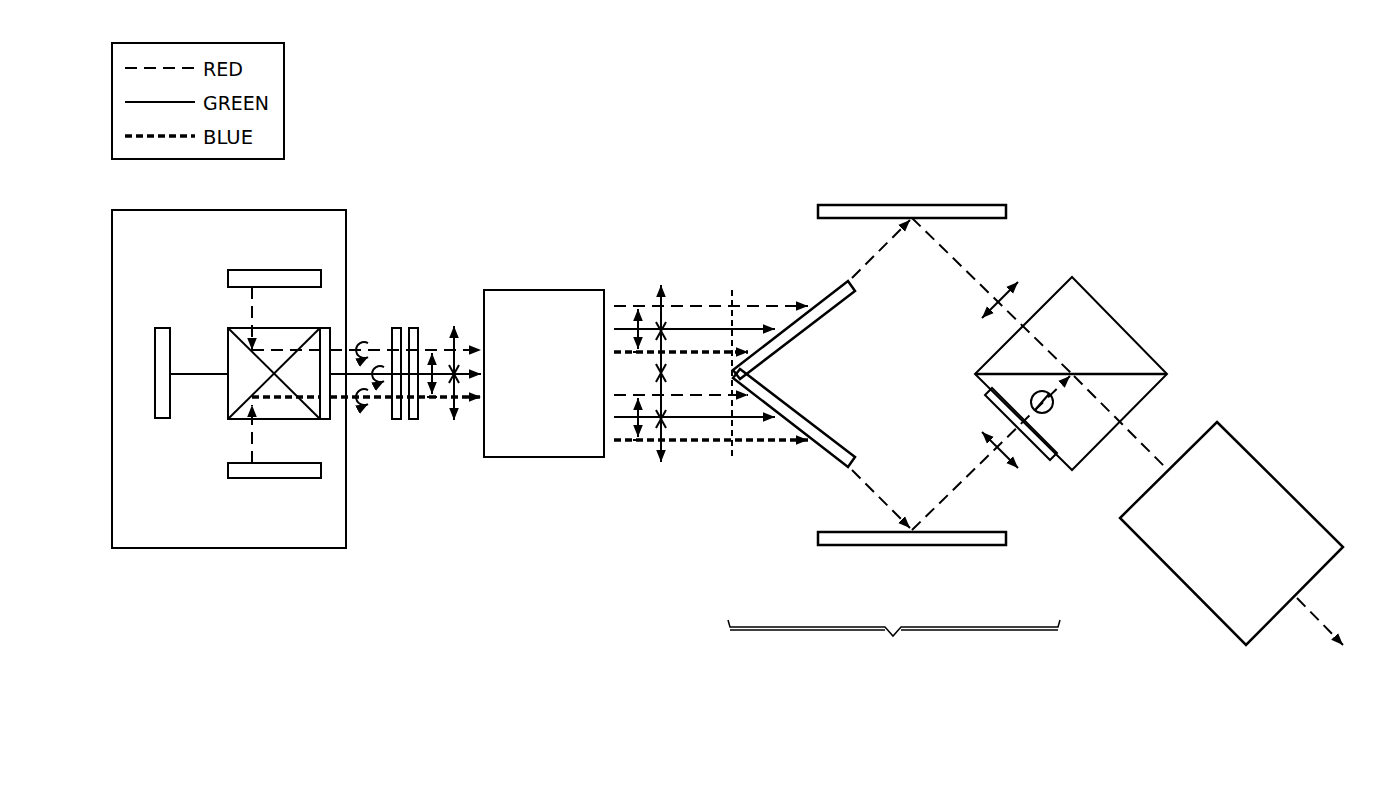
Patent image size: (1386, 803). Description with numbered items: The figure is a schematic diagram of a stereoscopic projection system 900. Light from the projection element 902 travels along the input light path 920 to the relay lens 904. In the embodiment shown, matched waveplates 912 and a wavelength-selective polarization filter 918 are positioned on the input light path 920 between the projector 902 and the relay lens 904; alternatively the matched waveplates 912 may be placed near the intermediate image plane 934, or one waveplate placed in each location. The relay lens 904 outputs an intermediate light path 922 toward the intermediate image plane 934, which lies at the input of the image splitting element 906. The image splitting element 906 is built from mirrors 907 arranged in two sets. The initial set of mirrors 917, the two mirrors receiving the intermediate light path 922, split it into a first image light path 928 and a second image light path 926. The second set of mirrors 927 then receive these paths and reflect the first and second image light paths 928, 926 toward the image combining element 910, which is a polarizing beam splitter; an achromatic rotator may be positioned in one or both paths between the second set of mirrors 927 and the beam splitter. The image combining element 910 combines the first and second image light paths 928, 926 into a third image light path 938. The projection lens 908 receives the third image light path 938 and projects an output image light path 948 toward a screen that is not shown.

The stereoscopic projection system 900 is at (357, 643).
The projection element 902 is at (170, 550).
The relay lens 904 is at (567, 388).
The image splitting element 906 is at (894, 646).
The mirrors 907 is at (869, 377).
The projection lens 908 is at (1282, 480).
The image combining element 910 is at (1143, 343).
The matched waveplates 912 is at (331, 326).
The initial set of mirrors 917 is at (803, 329).
The wavelength-selective polarization filter 918 is at (412, 420).
The input light path 920 is at (437, 340).
The intermediate light path 922 is at (633, 302).
The second image light path 926 is at (950, 493).
The second set of mirrors 927 is at (940, 205).
The first image light path 928 is at (950, 250).
The intermediate image plane 934 is at (733, 447).
The third image light path 938 is at (1148, 447).
The output image light path 948 is at (1325, 632).